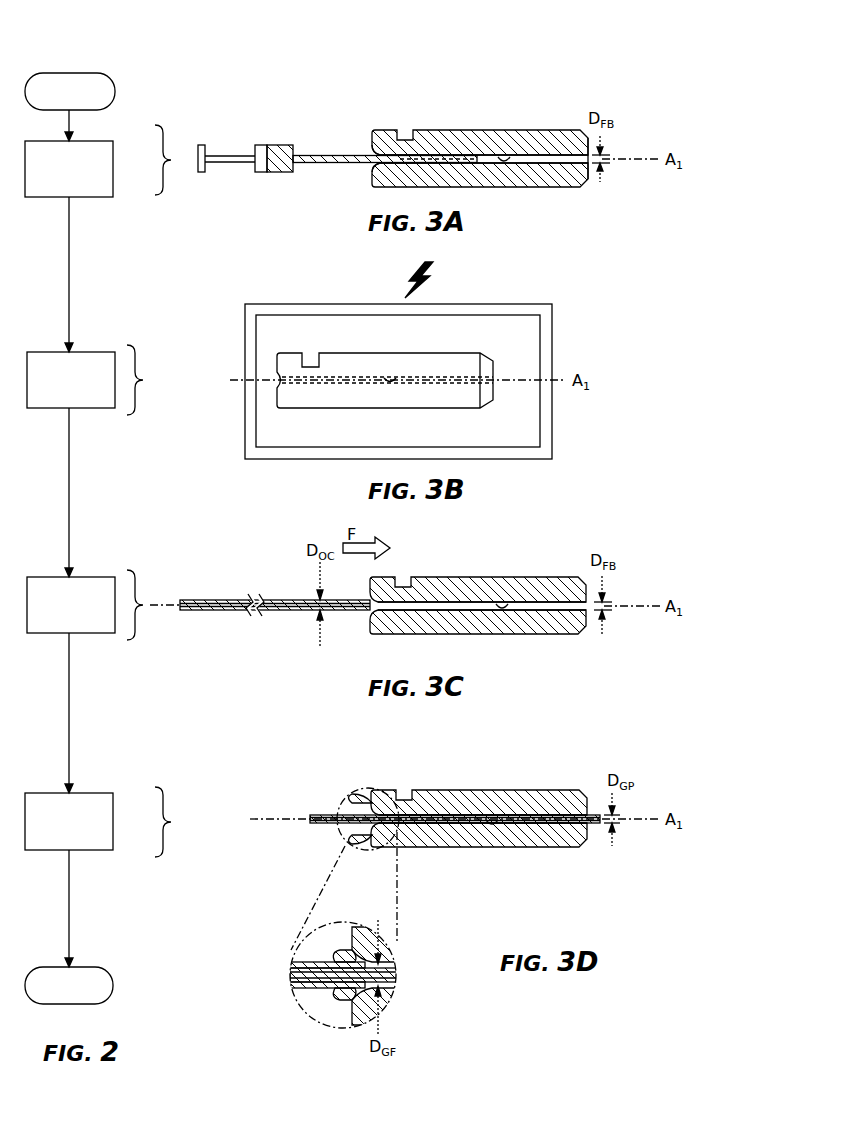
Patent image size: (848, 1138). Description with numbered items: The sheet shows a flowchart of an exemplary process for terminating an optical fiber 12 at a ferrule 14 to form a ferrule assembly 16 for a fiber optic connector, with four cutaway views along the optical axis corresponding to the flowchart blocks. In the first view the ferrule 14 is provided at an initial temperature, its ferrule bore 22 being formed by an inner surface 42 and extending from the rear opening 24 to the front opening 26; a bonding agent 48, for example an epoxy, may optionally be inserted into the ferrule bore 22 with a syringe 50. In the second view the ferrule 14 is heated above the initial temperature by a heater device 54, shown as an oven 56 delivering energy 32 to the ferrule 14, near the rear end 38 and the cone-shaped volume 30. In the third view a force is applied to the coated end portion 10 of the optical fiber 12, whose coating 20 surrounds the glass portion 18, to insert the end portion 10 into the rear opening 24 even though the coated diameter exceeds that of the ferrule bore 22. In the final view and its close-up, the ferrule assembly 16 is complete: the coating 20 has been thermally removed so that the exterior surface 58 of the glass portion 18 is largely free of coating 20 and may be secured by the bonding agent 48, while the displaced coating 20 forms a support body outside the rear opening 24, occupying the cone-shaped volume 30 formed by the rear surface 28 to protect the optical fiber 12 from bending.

In FIG. 3C, the end portion 10 is at (370, 588).
In FIG. 3D, the end portion 10 is at (551, 832).
In FIG. 3C, the optical fiber 12 is at (275, 612).
In FIG. 3A, the ferrule 14 is at (549, 142).
In FIG. 3B, the ferrule 14 is at (450, 365).
In FIG. 3C, the ferrule 14 is at (373, 628).
In FIG. 3C, the ferrule assembly 16 is at (262, 668).
In FIG. 3D, the ferrule assembly 16 is at (600, 726).
In FIG. 3C, the glass portion 18 is at (198, 611).
In FIG. 3C, the coating 20 is at (216, 599).
In FIG. 3D, the coating 20 is at (300, 962).
In FIG. 3A, the ferrule bore 22 is at (473, 156).
In FIG. 3B, the ferrule bore 22 is at (352, 378).
In FIG. 3C, the ferrule bore 22 is at (457, 603).
In FIG. 3D, the ferrule bore 22 is at (454, 815).
In FIG. 3A, the rear opening 24 is at (374, 148).
In FIG. 3B, the rear opening 24 is at (282, 374).
In FIG. 3C, the rear opening 24 is at (381, 590).
In FIG. 3D, the rear opening 24 is at (380, 948).
In FIG. 3A, the front opening 26 is at (591, 175).
In FIG. 3B, the front opening 26 is at (490, 378).
In FIG. 3C, the front opening 26 is at (591, 622).
In FIG. 3D, the front opening 26 is at (590, 838).
In FIG. 3D, the rear surface 28 is at (350, 928).
In FIG. 3A, the cone-shaped volume 30 is at (373, 169).
In FIG. 3B, the cone-shaped volume 30 is at (282, 384).
In FIG. 3D, the cone-shaped volume 30 is at (358, 1020).
In FIG. 3B, the energy 32 is at (428, 280).
In FIG. 3B, the rear end 38 is at (271, 414).
In FIG. 3D, the rear end 38 is at (369, 768).
In FIG. 3A, the inner surface 42 is at (508, 157).
In FIG. 3B, the inner surface 42 is at (391, 378).
In FIG. 3C, the inner surface 42 is at (503, 604).
In FIG. 3D, the inner surface 42 is at (492, 820).
In FIG. 3A, the bonding agent 48 is at (282, 148).
In FIG. 3A, the syringe 50 is at (262, 145).
In FIG. 3B, the heater device 54 is at (491, 298).
In FIG. 3B, the oven 56 is at (515, 304).
In FIG. 3D, the exterior surface 58 is at (426, 825).